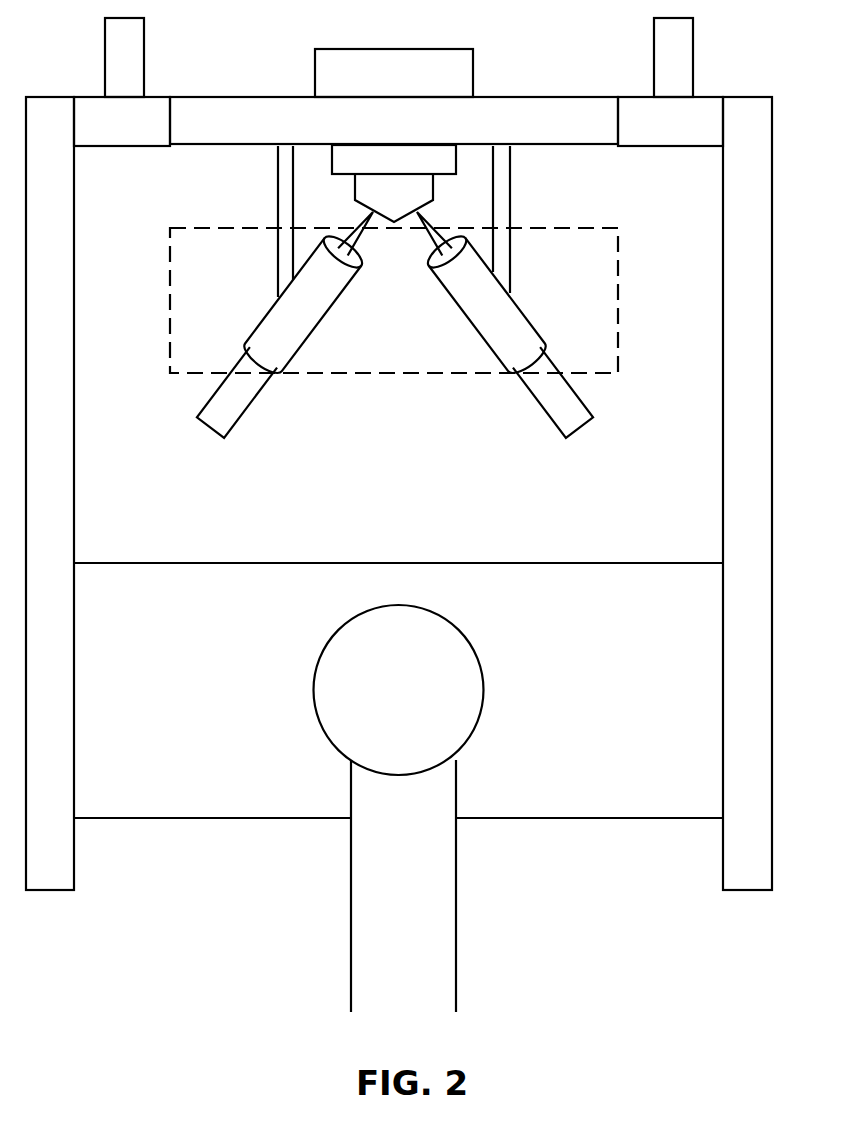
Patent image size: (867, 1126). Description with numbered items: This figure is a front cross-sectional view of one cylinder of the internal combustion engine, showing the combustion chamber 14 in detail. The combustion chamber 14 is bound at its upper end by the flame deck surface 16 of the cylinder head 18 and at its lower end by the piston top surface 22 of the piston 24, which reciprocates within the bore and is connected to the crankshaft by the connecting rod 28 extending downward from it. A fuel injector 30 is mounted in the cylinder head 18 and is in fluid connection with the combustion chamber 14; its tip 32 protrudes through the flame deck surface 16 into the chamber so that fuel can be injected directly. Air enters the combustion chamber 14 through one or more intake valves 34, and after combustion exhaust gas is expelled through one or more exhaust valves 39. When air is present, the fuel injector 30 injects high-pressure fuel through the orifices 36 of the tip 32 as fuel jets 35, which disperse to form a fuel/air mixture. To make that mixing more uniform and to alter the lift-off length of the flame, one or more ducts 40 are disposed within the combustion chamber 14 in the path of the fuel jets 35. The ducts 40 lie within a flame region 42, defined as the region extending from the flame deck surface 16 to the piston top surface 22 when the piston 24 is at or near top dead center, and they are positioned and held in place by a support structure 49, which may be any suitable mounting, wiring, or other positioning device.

The combustion chamber 14 is at (662, 497).
The flame deck surface 16 is at (556, 147).
The cylinder head 18 is at (521, 111).
The piston top surface 22 is at (447, 562).
The piston 24 is at (650, 727).
The connecting rod 28 is at (448, 801).
The fuel injector 30 is at (474, 66).
The tip 32 is at (378, 194).
The intake valve 34 is at (123, 96).
The fuel jet 35 is at (348, 251).
The orifice 36 is at (368, 211).
The exhaust valve 39 is at (675, 96).
The duct 40 is at (170, 292).
The flame region 42 is at (675, 312).
The support structure 49 is at (280, 213).